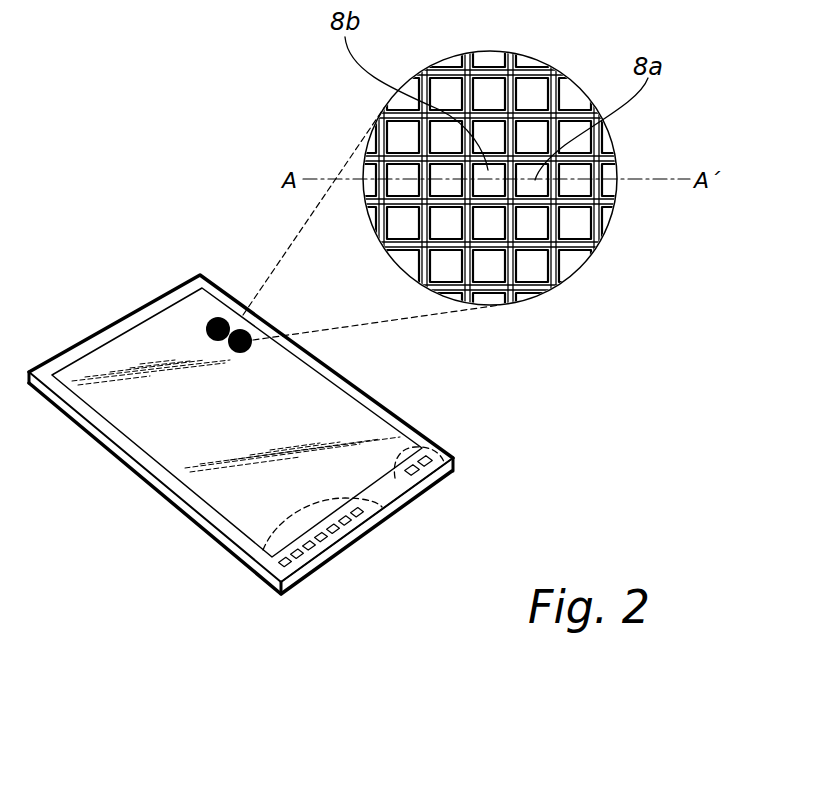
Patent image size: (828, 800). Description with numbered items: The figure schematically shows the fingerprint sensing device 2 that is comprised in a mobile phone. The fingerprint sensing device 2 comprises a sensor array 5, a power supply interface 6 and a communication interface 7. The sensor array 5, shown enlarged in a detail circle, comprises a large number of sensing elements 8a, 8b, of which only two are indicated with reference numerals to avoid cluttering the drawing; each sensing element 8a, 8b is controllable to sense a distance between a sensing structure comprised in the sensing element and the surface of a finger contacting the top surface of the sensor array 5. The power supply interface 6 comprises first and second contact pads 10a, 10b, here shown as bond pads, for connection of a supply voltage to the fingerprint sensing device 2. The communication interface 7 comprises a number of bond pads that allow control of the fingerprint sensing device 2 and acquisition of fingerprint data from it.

The fingerprint sensing device 2 is at (218, 228).
The sensor array 5 is at (343, 417).
The power supply interface 6 is at (443, 477).
The communication interface 7 is at (343, 563).
The sensing element 8a is at (535, 180).
The sensing element 8b is at (488, 170).
The first contact pad 10a is at (410, 476).
The second contact pad 10b is at (428, 457).